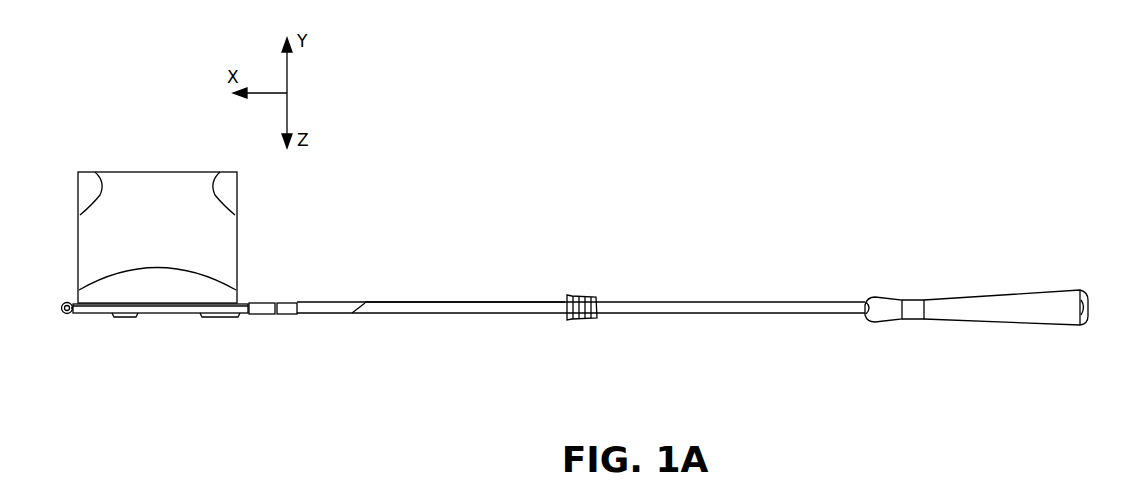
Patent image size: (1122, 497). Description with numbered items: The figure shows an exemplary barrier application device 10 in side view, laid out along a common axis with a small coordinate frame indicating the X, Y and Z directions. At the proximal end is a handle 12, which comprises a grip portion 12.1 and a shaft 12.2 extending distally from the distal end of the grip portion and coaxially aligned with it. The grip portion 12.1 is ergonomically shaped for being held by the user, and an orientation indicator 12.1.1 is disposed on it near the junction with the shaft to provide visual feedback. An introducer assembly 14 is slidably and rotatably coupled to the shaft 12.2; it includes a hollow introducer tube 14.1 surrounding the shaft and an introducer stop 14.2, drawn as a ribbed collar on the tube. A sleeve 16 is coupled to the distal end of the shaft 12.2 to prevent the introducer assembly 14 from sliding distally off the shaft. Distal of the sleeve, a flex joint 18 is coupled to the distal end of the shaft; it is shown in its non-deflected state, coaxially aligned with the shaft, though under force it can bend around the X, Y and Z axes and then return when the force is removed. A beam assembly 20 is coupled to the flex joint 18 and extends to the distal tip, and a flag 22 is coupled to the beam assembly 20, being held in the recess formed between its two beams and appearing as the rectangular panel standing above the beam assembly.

The barrier application device 10 is at (1075, 196).
The handle 12 is at (303, 382).
The grip portion 12.1 is at (1087, 258).
The orientation indicator 12.1.1 is at (867, 297).
The shaft 12.2 is at (303, 250).
The introducer assembly 14 is at (357, 340).
The introducer tube 14.1 is at (442, 300).
The introducer stop 14.2 is at (581, 296).
The sleeve 16 is at (284, 301).
The flex joint 18 is at (260, 301).
The beam assembly 20 is at (176, 315).
The flag 22 is at (143, 187).